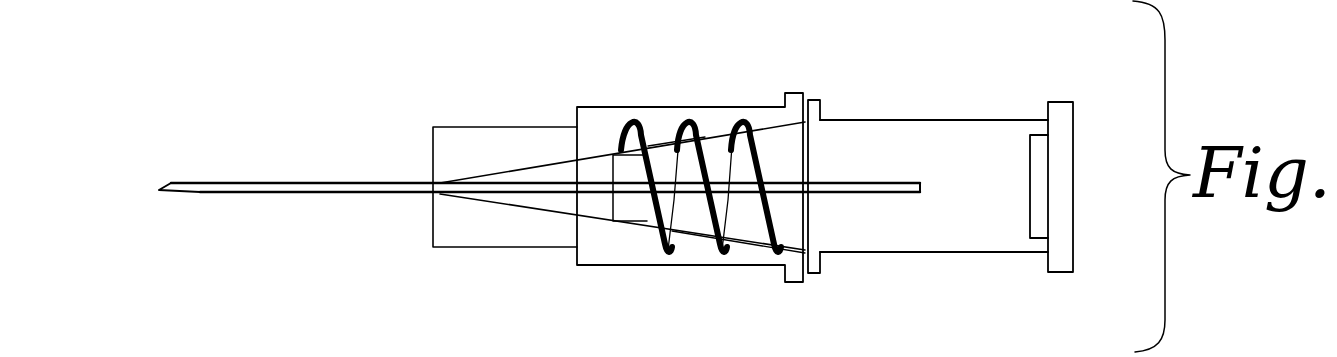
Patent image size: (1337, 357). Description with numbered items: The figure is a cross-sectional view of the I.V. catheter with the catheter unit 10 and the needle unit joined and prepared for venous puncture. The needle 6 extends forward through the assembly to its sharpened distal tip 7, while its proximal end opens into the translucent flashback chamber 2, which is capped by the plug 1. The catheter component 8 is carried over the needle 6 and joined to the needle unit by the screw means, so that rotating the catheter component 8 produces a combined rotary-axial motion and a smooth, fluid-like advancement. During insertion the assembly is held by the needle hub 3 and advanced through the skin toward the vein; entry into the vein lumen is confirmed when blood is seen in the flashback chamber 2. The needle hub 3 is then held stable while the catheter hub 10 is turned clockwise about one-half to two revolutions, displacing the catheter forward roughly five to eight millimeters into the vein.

The plug 1 is at (1060, 174).
The flashback chamber 2 is at (998, 228).
The needle hub 3 is at (808, 93).
The needle 6 is at (900, 190).
The needle tip 7 is at (172, 186).
The catheter component 8 is at (228, 182).
The catheter hub 10 is at (630, 107).